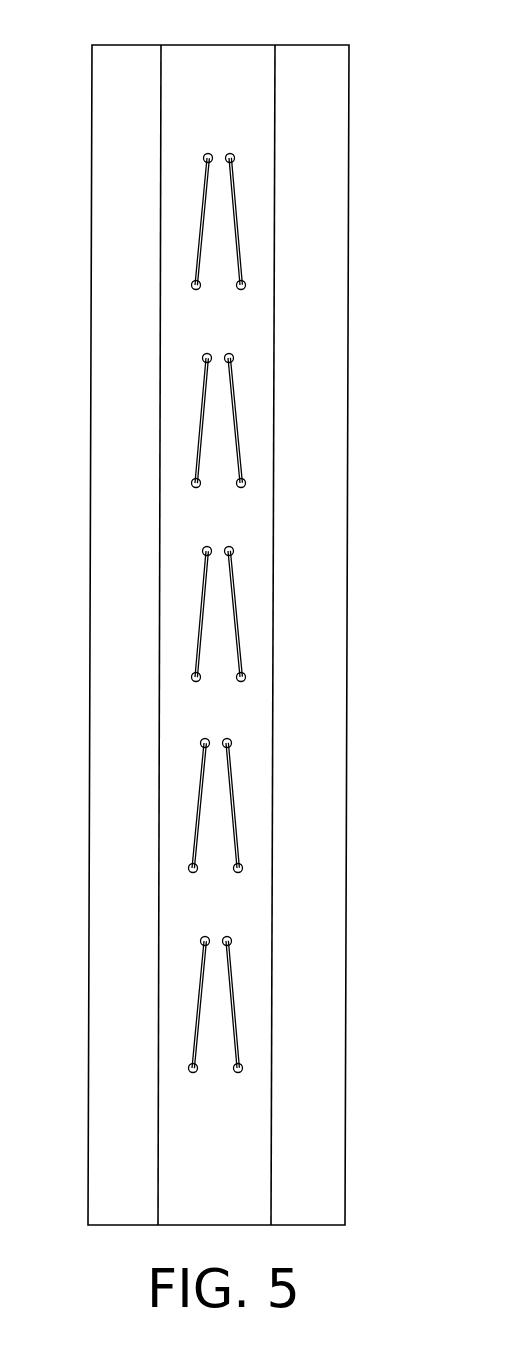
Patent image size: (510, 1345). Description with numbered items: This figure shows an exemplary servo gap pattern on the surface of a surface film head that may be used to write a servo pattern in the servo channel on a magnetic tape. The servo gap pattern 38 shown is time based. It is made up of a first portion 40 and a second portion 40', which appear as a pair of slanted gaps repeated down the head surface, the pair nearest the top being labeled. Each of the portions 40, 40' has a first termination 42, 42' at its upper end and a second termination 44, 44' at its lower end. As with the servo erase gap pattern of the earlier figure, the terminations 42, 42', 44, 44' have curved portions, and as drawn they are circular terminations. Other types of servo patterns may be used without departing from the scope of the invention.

The servo gap pattern 38 is at (250, 260).
The first portion 40 is at (110, 221).
The second portion 40' is at (329, 202).
The first termination 42 is at (198, 81).
The first termination 42' is at (267, 81).
The second termination 44 is at (119, 330).
The second termination 44' is at (337, 321).